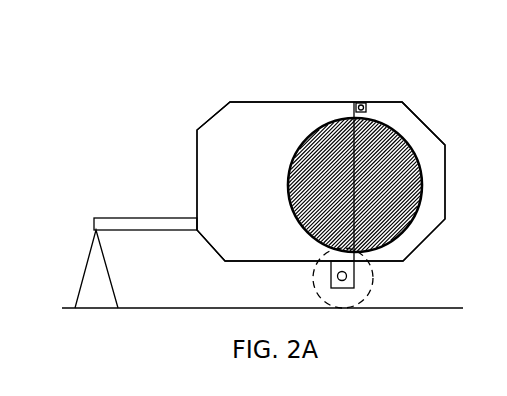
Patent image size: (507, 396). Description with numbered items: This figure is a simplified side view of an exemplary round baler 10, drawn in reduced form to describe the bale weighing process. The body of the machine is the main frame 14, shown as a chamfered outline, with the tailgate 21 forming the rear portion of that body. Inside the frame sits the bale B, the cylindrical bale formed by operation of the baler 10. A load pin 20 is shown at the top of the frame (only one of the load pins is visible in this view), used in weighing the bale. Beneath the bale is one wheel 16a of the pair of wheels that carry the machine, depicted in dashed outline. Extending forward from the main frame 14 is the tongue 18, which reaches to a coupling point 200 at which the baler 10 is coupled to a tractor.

The round baler 10 is at (196, 99).
The main frame 14 is at (230, 101).
The tongue 18 is at (118, 218).
The load pin 20 is at (358, 101).
The tailgate 21 is at (418, 118).
The bale B is at (400, 180).
The wheel 16a is at (370, 283).
The coupling point 200 is at (98, 278).